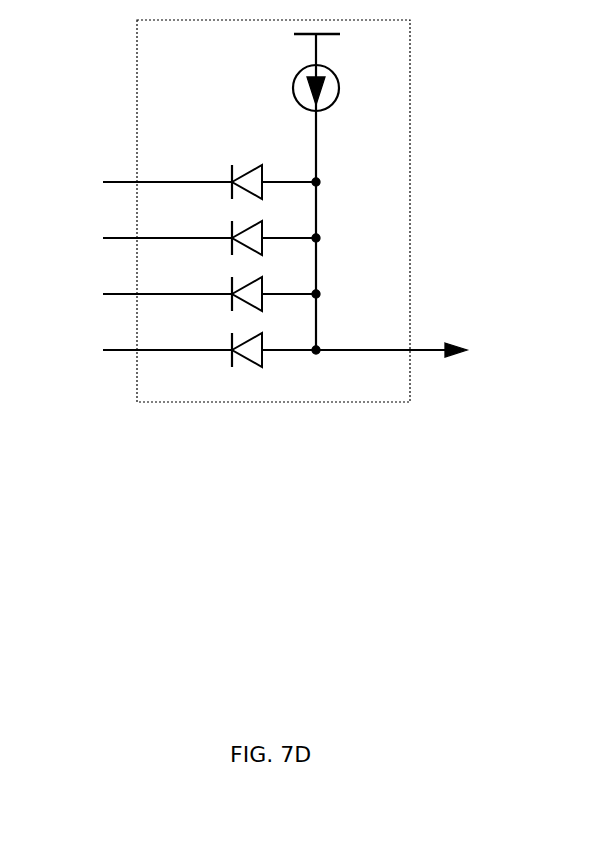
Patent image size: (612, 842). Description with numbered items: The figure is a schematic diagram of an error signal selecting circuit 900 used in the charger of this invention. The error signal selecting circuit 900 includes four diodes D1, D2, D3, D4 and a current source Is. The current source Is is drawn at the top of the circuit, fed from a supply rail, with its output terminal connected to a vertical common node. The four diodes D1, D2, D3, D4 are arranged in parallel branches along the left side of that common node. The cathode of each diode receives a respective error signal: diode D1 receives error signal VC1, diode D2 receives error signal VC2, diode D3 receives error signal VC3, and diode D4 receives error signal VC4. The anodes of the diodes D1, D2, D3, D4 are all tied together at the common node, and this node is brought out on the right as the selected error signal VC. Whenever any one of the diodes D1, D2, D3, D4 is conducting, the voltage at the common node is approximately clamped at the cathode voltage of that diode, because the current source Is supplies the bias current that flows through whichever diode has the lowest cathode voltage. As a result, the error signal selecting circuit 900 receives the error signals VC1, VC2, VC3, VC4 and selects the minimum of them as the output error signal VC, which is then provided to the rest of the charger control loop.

The error signal selecting circuit 900 is at (410, 168).
The current source Is is at (330, 108).
The diode D1 is at (242, 174).
The diode D2 is at (242, 230).
The diode D3 is at (242, 287).
The diode D4 is at (242, 344).
The error signal VC1 is at (142, 166).
The error signal VC2 is at (142, 239).
The error signal VC3 is at (142, 296).
The error signal VC4 is at (142, 352).
The error signal VC is at (396, 332).